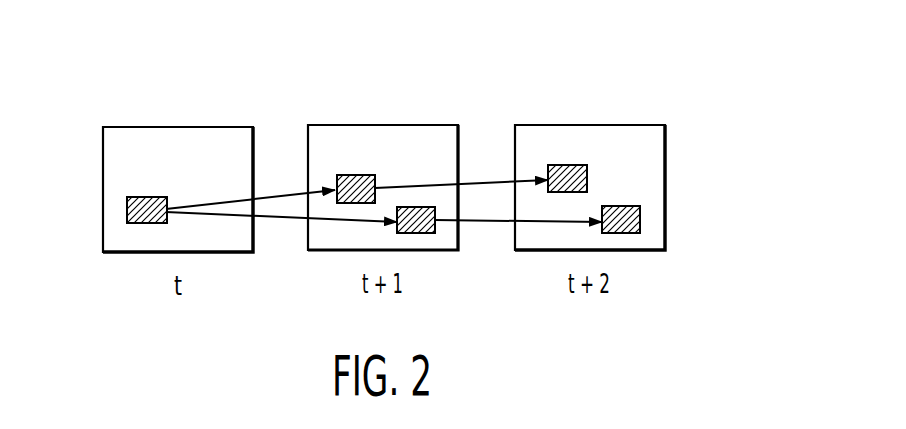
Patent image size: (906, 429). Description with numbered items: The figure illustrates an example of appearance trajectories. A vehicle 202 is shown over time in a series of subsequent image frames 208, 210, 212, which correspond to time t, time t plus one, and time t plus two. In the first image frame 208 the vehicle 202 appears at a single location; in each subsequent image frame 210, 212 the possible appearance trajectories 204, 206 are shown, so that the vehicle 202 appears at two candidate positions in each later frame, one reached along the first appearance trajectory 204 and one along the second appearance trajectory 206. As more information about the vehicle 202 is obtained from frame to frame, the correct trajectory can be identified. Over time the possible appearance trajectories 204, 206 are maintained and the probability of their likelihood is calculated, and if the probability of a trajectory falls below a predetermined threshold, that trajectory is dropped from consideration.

The vehicle 202 is at (127, 210).
The appearance trajectory 204 is at (278, 192).
The appearance trajectory 206 is at (277, 218).
The image frame 208 is at (118, 126).
The image frame 210 is at (395, 125).
The image frame 212 is at (618, 125).